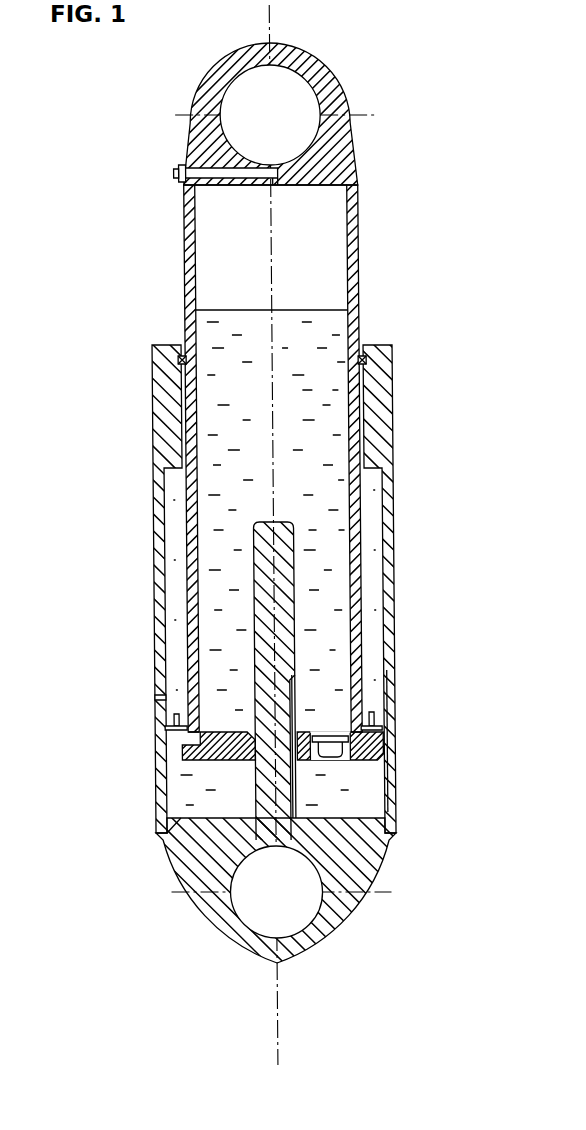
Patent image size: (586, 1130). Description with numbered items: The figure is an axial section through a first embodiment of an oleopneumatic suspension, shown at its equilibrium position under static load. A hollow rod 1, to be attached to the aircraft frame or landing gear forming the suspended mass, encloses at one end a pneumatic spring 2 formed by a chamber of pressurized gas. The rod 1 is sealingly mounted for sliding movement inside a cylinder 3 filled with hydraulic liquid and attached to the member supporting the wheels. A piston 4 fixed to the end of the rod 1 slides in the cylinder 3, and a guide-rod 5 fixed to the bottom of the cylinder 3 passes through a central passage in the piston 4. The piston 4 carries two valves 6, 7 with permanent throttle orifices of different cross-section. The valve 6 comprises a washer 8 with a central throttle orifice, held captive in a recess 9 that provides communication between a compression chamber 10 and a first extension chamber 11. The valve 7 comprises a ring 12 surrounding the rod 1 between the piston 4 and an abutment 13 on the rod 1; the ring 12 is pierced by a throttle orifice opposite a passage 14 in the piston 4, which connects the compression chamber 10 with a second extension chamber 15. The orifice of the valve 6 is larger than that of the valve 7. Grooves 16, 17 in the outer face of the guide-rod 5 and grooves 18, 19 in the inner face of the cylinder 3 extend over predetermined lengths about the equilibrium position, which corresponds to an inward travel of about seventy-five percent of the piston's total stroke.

The hollow rod 1 is at (357, 232).
The pneumatic spring 2 is at (222, 248).
The cylinder 3 is at (378, 418).
The piston 4 is at (217, 750).
The guide-rod 5 is at (281, 523).
The valve 6 is at (318, 706).
The valve 7 is at (166, 715).
The washer 8 is at (356, 747).
The recess 9 is at (317, 745).
The compression chamber 10 is at (171, 802).
The first extension chamber 11 is at (277, 516).
The ring 12 is at (365, 723).
The abutment 13 is at (193, 710).
The passage 14 is at (162, 752).
The second extension chamber 15 is at (361, 540).
The groove 16 is at (378, 840).
The groove 17 is at (174, 833).
The groove 18 is at (385, 790).
The groove 19 is at (152, 697).